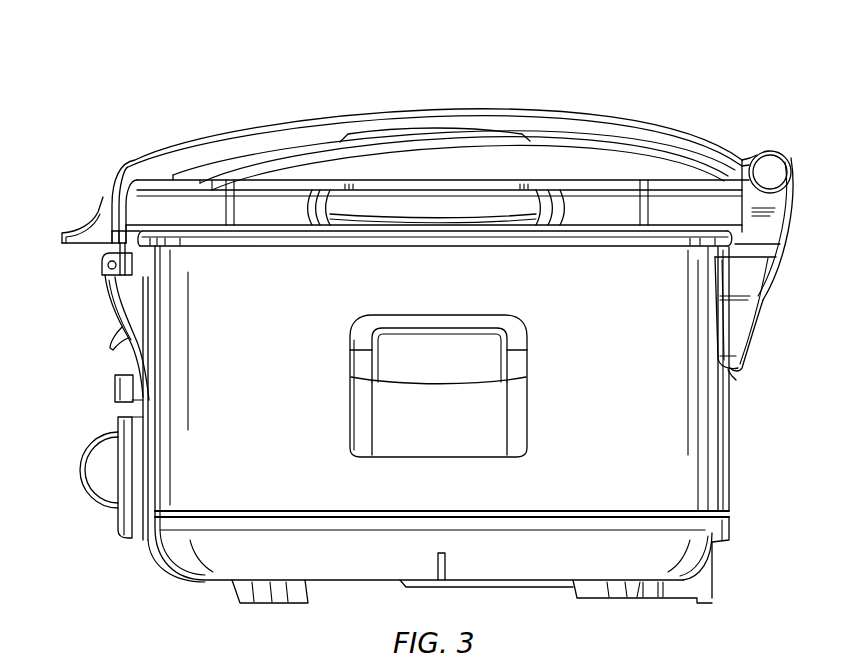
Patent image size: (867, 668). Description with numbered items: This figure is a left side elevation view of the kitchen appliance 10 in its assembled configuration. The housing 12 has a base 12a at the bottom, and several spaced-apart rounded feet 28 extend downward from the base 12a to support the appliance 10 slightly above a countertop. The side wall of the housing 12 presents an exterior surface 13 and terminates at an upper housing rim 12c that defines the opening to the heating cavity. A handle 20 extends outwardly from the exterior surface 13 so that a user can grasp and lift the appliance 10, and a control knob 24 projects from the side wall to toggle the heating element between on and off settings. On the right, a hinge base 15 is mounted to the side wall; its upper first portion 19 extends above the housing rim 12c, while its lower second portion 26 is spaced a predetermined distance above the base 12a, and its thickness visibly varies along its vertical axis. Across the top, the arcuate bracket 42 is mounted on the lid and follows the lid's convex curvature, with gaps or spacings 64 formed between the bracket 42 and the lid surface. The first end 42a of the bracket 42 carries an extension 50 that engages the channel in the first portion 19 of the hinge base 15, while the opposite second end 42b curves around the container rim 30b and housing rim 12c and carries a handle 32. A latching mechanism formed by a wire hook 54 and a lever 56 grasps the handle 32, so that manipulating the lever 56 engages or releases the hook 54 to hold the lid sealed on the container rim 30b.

The kitchen appliance 10 is at (586, 47).
The housing 12 is at (700, 458).
The base 12a is at (715, 522).
The housing rim 12c is at (598, 249).
The exterior surface 13 is at (672, 433).
The hinge base 15 is at (741, 313).
The first portion 19 is at (786, 230).
The handle 20 is at (490, 413).
The control knob 24 is at (92, 444).
The second portion 26 is at (736, 372).
The feet 28 is at (612, 602).
The container rim 30b is at (270, 218).
The handle 32 is at (77, 232).
The bracket 42 is at (562, 120).
The first end 42a is at (722, 160).
The second end 42b is at (141, 170).
The extension 50 is at (778, 176).
The wire hook 54 is at (108, 257).
The lever 56 is at (110, 336).
The spacings 64 is at (216, 170).